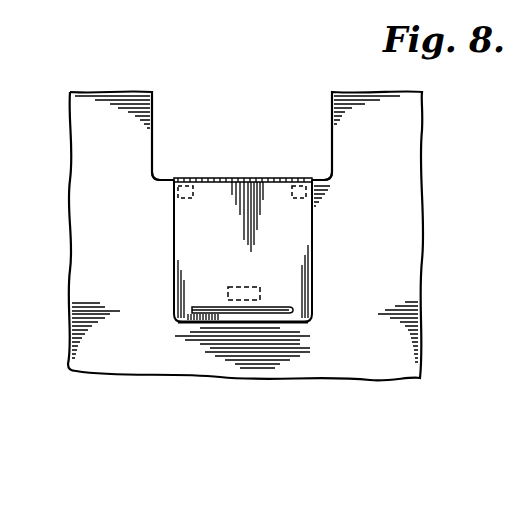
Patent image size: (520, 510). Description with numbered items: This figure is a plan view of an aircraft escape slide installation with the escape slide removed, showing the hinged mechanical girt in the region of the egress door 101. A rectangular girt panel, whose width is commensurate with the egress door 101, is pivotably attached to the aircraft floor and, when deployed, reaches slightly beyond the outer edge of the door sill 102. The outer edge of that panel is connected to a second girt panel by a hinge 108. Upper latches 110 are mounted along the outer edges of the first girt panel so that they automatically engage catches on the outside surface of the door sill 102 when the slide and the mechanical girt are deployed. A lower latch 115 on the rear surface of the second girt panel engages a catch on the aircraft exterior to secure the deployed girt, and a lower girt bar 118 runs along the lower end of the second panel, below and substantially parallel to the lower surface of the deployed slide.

The egress door 101 is at (322, 152).
The door sill 102 is at (158, 183).
The hinge 108 is at (237, 177).
The upper latch 110 is at (193, 199).
The lower latch 115 is at (252, 285).
The lower girt bar 118 is at (296, 308).